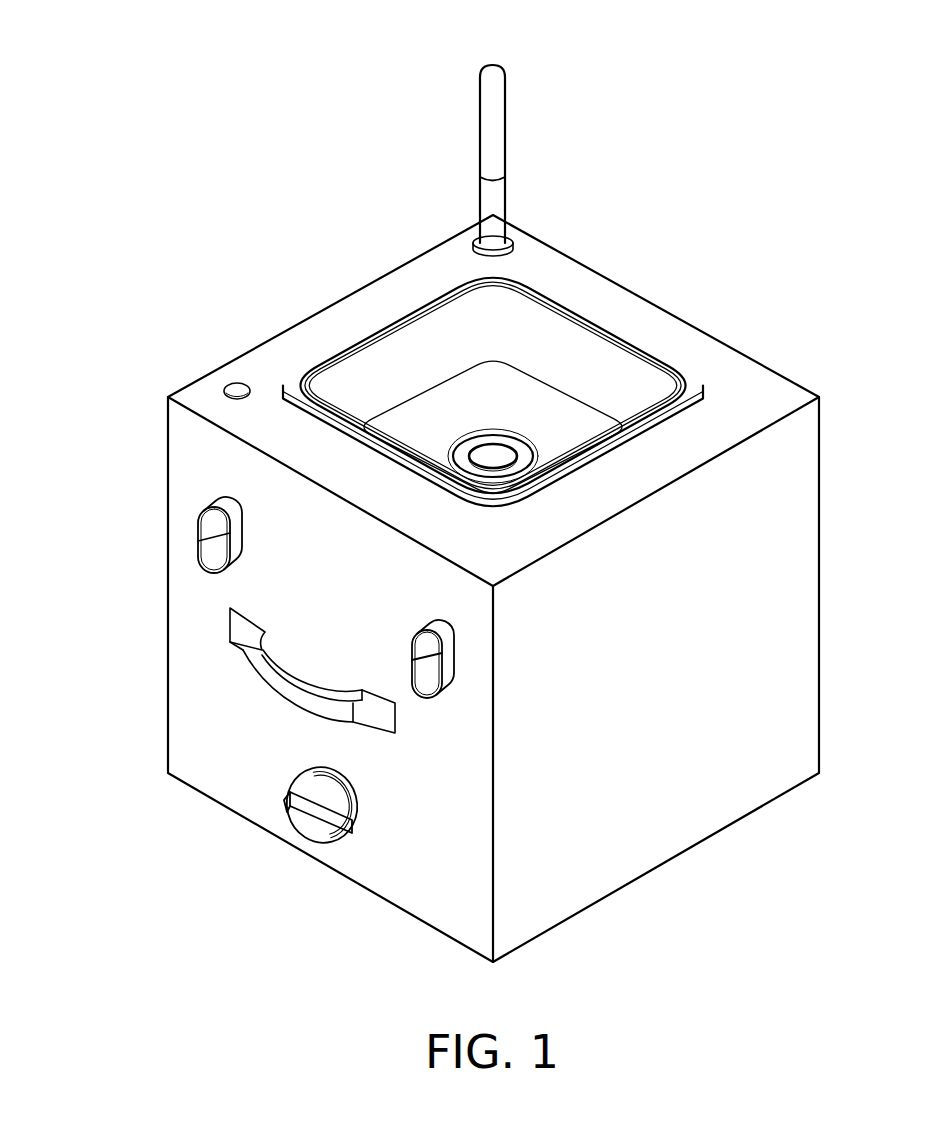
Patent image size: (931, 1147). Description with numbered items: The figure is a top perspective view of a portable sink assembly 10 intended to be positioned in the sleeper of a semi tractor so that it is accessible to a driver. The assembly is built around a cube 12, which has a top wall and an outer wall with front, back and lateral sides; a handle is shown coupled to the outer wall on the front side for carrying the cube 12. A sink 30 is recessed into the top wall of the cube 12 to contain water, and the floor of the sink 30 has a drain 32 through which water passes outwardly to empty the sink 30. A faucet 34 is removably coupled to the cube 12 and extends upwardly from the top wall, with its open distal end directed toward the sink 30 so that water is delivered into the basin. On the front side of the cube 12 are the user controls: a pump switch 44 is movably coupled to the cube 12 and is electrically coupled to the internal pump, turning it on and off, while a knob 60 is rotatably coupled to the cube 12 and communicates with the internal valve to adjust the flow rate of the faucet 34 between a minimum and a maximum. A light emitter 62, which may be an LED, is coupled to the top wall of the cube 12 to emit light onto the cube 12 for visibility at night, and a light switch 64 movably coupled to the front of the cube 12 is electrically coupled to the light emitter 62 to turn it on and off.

The portable sink assembly 10 is at (213, 135).
The cube 12 is at (192, 383).
The sink 30 is at (375, 328).
The drain 32 is at (493, 446).
The faucet 34 is at (482, 106).
The pump switch 44 is at (430, 682).
The knob 60 is at (317, 831).
The light emitter 62 is at (237, 383).
The light switch 64 is at (203, 543).